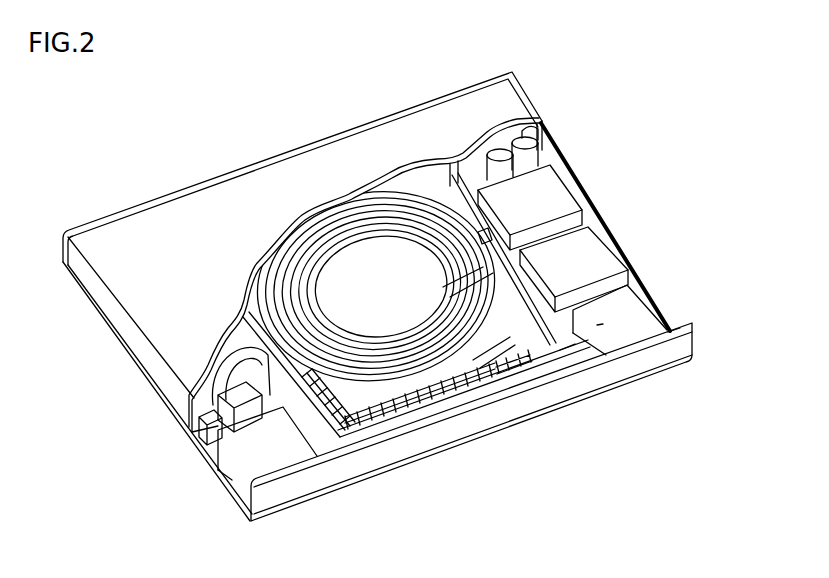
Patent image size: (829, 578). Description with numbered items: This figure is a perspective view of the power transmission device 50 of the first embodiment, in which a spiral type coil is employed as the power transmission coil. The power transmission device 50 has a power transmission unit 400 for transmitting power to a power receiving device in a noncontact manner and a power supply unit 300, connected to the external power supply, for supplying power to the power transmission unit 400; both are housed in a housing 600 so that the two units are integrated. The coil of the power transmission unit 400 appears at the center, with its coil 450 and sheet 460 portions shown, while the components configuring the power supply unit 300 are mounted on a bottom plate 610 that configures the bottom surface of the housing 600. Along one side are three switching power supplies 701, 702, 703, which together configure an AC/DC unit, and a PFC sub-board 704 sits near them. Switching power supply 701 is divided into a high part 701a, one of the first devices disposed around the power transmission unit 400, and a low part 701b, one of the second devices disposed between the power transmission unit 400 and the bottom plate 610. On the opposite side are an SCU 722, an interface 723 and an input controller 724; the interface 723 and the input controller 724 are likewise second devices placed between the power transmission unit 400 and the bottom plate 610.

The power transmission device 50 is at (623, 446).
The power supply unit 300 is at (635, 172).
The power transmission unit 400 is at (418, 333).
The coil 450 is at (558, 358).
The magnetic sheet 460 is at (497, 327).
The housing 600 is at (363, 148).
The bottom plate 610 is at (597, 323).
The switching power supply 701 is at (638, 313).
The high part of switching power supply 701a is at (671, 338).
The low part of switching power supply 701b is at (567, 358).
The switching power supply 702 is at (600, 258).
The switching power supply 703 is at (548, 200).
The PFC sub-board 704 is at (540, 130).
The SCU 722 is at (257, 449).
The interface 723 is at (373, 432).
The input controller 724 is at (460, 397).